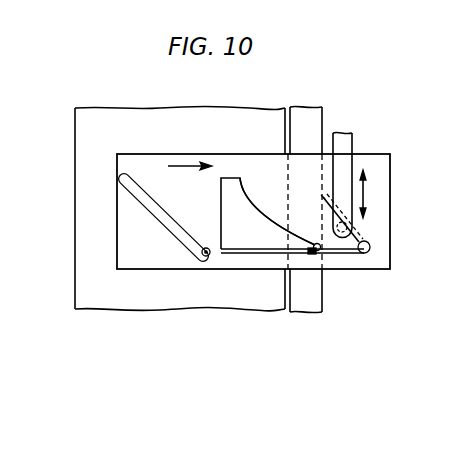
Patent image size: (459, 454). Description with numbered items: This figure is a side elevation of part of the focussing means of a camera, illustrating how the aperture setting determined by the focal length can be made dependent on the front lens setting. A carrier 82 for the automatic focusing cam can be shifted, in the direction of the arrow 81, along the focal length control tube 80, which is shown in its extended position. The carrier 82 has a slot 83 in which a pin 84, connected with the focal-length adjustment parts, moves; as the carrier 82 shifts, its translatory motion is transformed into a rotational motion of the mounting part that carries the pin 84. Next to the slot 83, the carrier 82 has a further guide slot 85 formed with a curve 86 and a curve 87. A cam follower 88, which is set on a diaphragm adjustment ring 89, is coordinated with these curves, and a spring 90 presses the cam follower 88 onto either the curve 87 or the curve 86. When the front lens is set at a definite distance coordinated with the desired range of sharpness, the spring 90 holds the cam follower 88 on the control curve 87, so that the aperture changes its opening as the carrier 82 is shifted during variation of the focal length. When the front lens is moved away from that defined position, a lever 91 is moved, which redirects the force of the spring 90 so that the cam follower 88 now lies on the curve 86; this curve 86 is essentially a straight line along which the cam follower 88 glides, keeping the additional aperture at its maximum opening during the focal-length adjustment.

The focal length control tube 80 is at (118, 313).
The arrow 81 is at (185, 162).
The carrier 82 is at (117, 210).
The slot 83 is at (172, 220).
The pin 84 is at (205, 258).
The guide slot 85 is at (233, 210).
The curve 86 is at (249, 252).
The curve 87 is at (256, 210).
The cam follower 88 is at (318, 252).
The diaphragm adjustment ring 89 is at (306, 314).
The spring 90 is at (356, 256).
The lever 91 is at (340, 147).